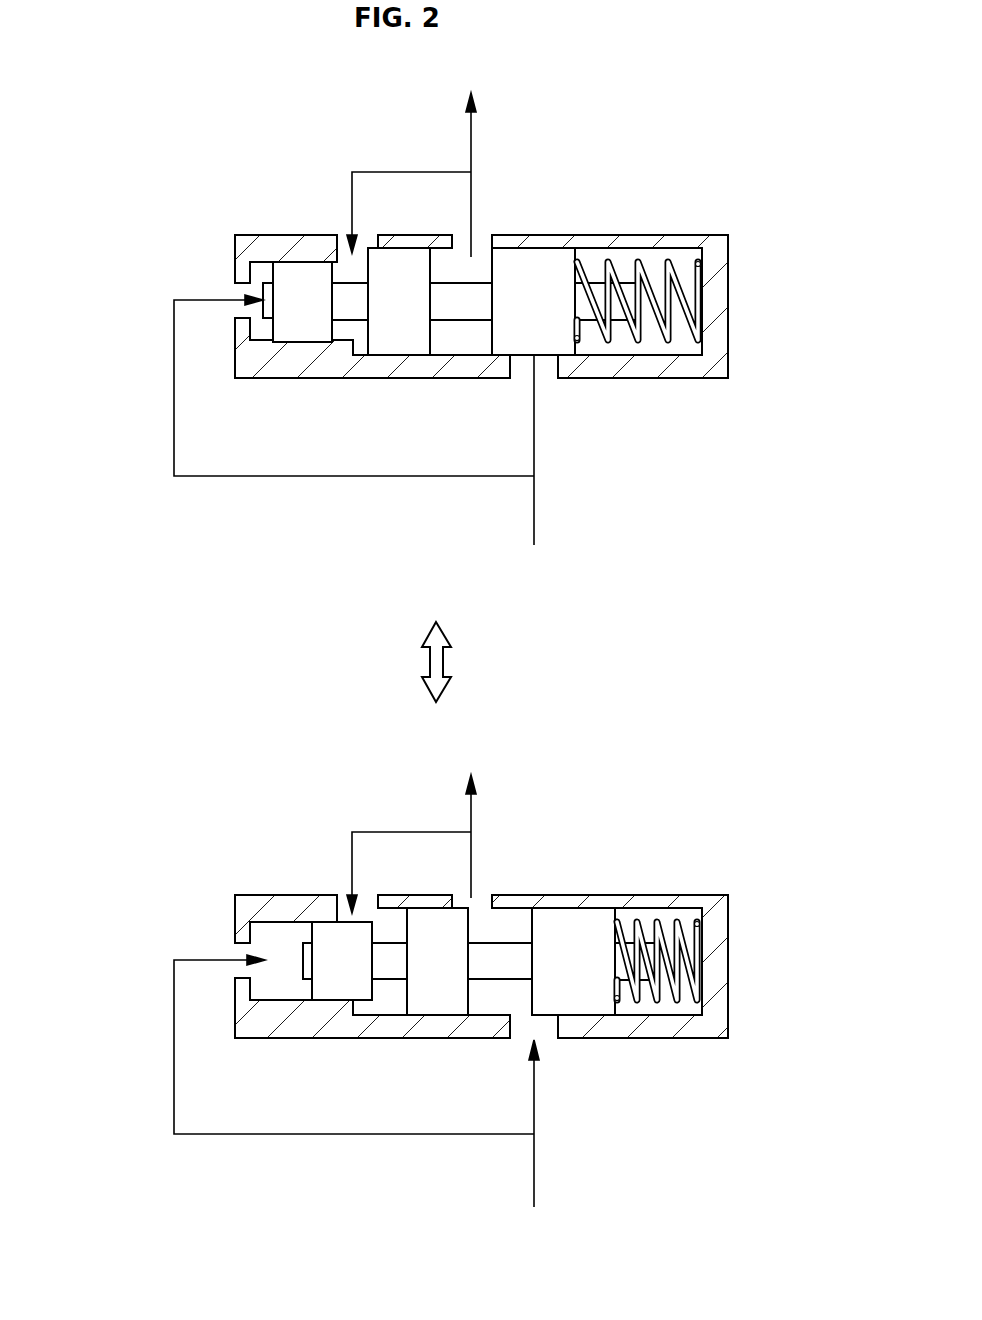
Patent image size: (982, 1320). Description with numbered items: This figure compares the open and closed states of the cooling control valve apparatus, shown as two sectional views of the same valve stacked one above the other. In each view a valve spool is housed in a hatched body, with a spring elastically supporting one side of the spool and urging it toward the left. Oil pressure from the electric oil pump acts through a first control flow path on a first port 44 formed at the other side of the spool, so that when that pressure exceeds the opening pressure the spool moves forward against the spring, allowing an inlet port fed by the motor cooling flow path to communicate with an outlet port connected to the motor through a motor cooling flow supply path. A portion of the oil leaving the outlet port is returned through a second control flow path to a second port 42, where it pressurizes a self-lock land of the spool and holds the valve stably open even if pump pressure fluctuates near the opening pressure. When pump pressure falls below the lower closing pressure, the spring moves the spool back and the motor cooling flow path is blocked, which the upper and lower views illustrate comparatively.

The second port 42 is at (343, 232).
The first port 44 is at (245, 292).